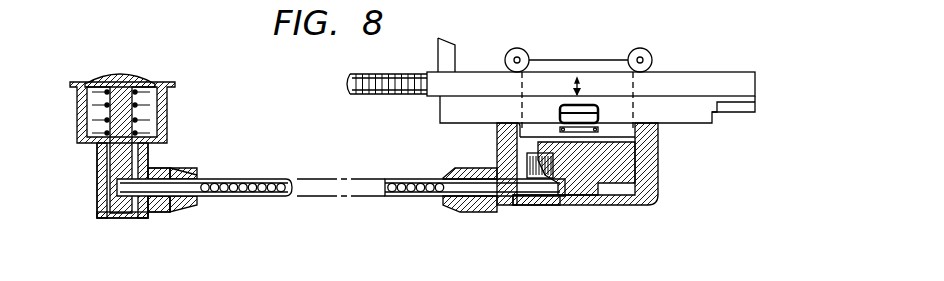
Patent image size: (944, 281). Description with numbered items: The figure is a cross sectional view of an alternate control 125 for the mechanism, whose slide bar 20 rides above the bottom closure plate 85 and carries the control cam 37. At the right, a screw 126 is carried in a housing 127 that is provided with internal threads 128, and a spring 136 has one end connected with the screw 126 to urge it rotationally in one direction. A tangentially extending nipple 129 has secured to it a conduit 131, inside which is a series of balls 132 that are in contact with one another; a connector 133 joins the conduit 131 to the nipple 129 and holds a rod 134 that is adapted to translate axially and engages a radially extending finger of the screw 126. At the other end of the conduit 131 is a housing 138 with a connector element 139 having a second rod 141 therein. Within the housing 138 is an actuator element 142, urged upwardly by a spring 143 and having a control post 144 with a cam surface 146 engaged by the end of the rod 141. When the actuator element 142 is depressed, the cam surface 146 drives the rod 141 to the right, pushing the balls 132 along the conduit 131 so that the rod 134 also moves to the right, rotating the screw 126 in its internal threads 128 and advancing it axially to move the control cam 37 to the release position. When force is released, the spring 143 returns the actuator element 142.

The slide bar 20 is at (697, 83).
The control cam 37 is at (585, 60).
The bottom closure plate 85 is at (702, 113).
The alternate control 125 is at (345, 209).
The screw 126 is at (632, 177).
The housing 127 is at (496, 130).
The internal threads 128 is at (641, 157).
The nipple 129 is at (465, 172).
The conduit 131 is at (268, 179).
The balls 132 is at (221, 179).
The connector 133 is at (468, 212).
The rod 134 is at (508, 197).
The spring 136 is at (555, 198).
The housing 138 is at (159, 118).
The connector element 139 is at (172, 168).
The second rod 141 is at (187, 197).
The actuator element 142 is at (137, 80).
The spring 143 is at (96, 120).
The control post 144 is at (120, 152).
The cam surface 146 is at (99, 219).